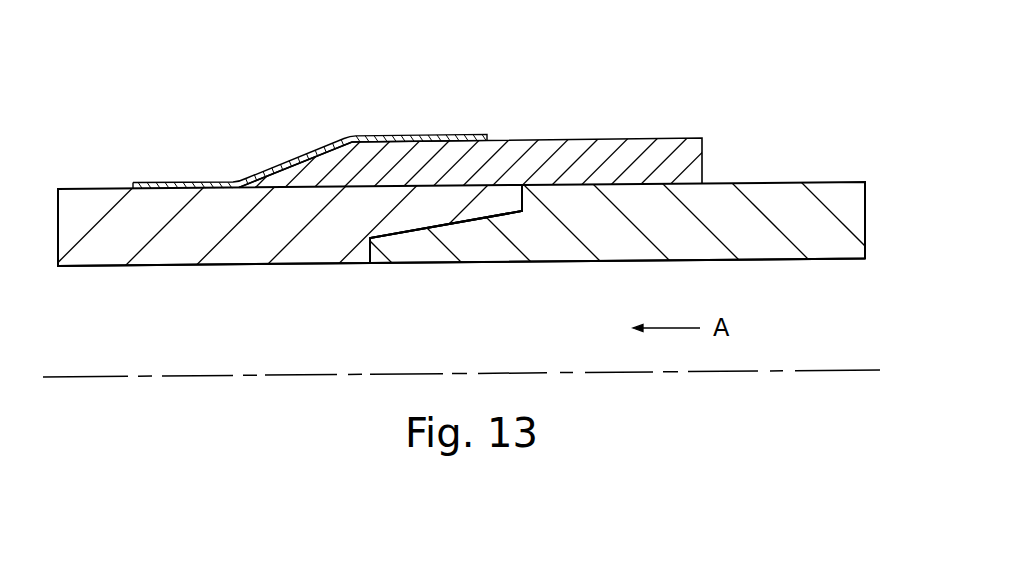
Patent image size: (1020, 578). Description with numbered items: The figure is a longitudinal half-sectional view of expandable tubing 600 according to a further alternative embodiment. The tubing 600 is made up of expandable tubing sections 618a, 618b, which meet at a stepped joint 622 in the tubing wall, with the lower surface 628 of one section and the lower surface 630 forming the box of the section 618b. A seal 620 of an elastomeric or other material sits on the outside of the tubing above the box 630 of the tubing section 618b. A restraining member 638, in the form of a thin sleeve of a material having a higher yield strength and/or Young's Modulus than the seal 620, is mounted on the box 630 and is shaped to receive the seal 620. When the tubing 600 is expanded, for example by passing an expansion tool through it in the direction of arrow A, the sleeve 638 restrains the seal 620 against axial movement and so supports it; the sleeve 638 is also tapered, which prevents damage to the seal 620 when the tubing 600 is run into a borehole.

The expandable tubing 600 is at (470, 188).
The expandable tubing section 618a is at (785, 246).
The expandable tubing section 618b is at (150, 258).
The seal 620 is at (565, 126).
The joint step 622 is at (383, 277).
The lower surface of first portion 628 is at (542, 251).
The box 630 is at (308, 256).
The restraining member 638 is at (410, 137).